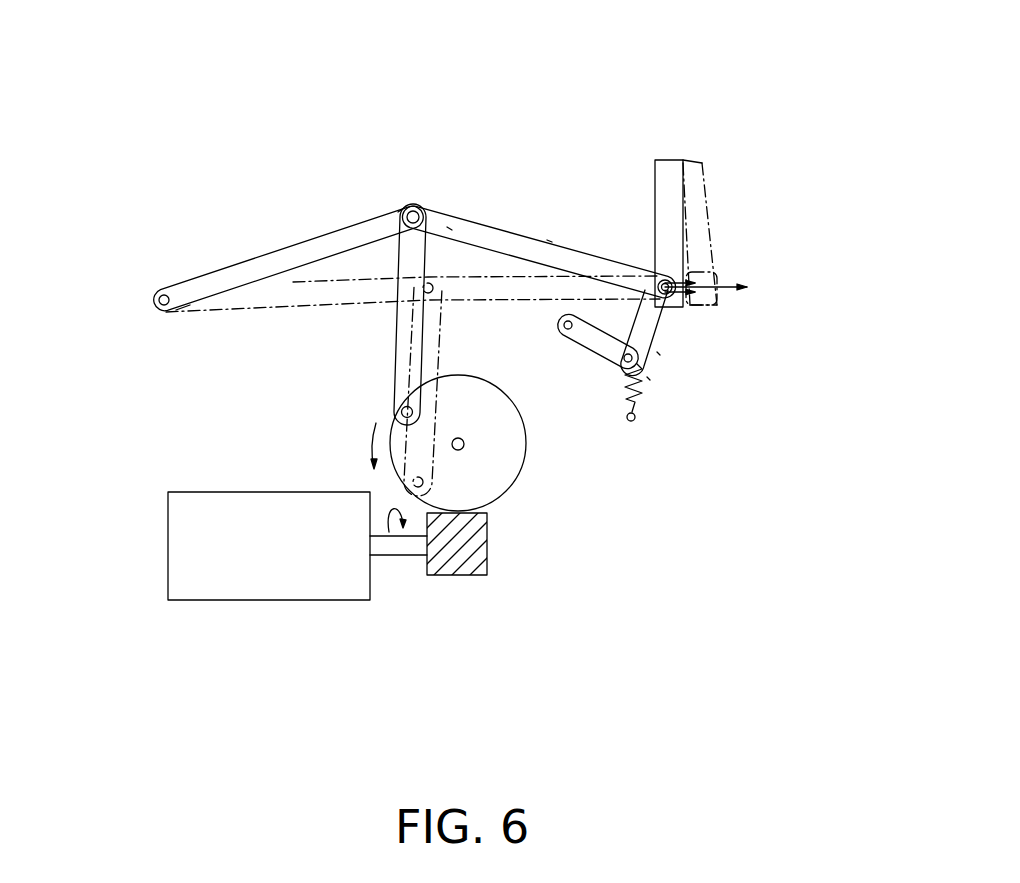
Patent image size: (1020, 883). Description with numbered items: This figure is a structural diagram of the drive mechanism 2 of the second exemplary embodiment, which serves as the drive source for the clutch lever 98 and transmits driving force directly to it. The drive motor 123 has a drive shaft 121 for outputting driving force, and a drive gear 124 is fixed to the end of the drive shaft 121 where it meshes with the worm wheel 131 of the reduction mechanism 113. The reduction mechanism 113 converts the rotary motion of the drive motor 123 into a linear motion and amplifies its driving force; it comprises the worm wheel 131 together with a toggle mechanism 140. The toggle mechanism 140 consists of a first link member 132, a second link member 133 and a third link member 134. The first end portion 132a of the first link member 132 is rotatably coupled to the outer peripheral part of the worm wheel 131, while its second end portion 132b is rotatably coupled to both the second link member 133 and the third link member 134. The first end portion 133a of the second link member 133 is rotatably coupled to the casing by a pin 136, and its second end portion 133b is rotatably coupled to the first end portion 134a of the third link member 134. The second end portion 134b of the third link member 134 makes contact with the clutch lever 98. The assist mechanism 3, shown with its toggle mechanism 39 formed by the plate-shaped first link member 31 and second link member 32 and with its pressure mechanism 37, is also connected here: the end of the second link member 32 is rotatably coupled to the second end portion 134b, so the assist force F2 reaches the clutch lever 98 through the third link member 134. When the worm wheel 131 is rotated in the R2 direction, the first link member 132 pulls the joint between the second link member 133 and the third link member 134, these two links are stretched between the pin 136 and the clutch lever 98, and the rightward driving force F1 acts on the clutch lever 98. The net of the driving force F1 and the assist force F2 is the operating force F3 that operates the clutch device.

The drive mechanism 2 is at (197, 478).
The assist mechanism 3 is at (647, 377).
The first link member 31 is at (590, 347).
The second link member 32 is at (650, 330).
The pressure mechanism 37 is at (638, 407).
The toggle mechanism 39 is at (657, 352).
The clutch lever 98 is at (668, 172).
The reduction mechanism 113 is at (280, 233).
The drive shaft 121 is at (402, 545).
The drive motor 123 is at (268, 578).
The drive gear 124 is at (480, 548).
The worm wheel 131 is at (508, 438).
The first link member 132 is at (401, 278).
The first end portion 132a is at (400, 396).
The second end portion 132b is at (417, 237).
The second link member 133 is at (220, 282).
The first end portion 133a is at (192, 302).
The second end portion 133b is at (395, 214).
The third link member 134 is at (490, 240).
The first end portion 134a is at (447, 227).
The second end portion 134b is at (638, 275).
The pin 136 is at (165, 288).
The toggle mechanism 140 is at (547, 240).
The driving force F1 is at (688, 282).
The assist force F2 is at (688, 298).
The operating force F3 is at (721, 279).
The R2 direction R2 is at (372, 437).